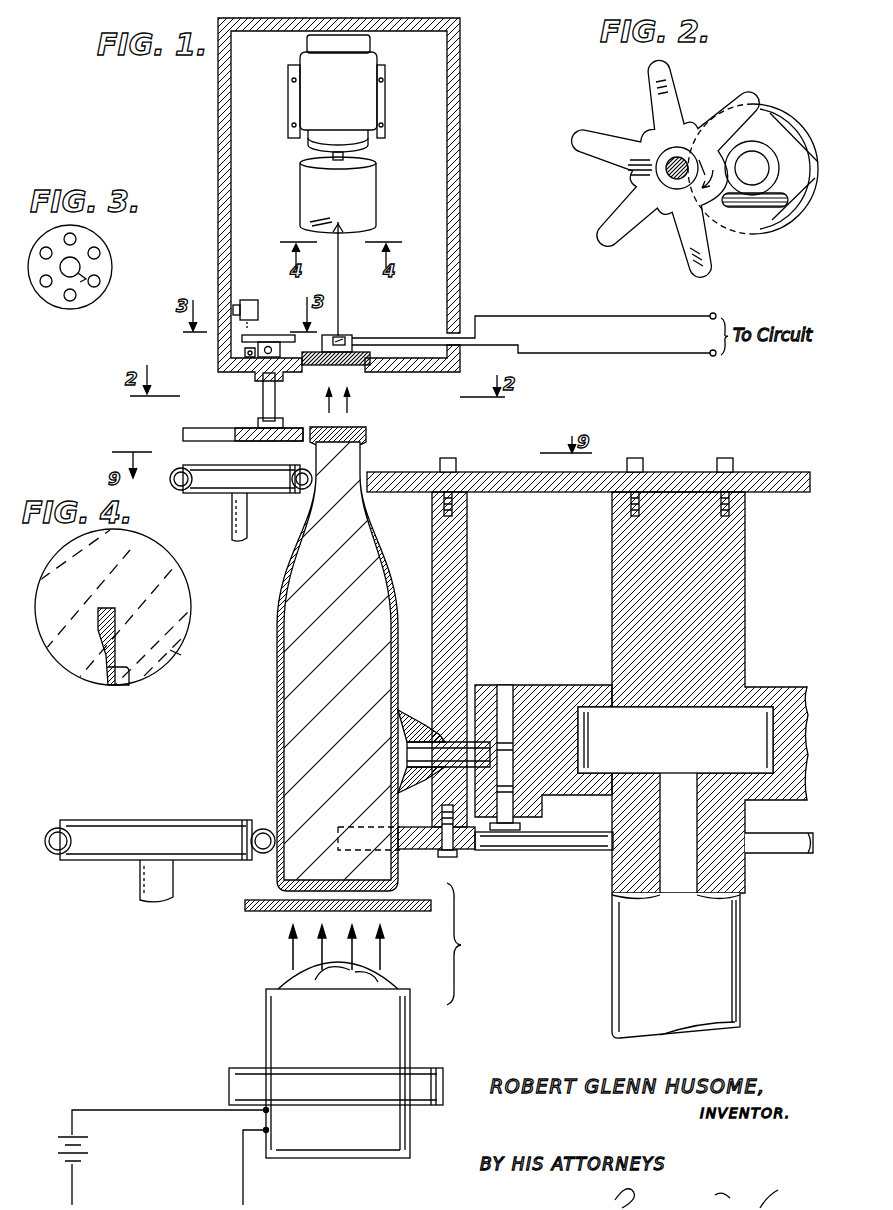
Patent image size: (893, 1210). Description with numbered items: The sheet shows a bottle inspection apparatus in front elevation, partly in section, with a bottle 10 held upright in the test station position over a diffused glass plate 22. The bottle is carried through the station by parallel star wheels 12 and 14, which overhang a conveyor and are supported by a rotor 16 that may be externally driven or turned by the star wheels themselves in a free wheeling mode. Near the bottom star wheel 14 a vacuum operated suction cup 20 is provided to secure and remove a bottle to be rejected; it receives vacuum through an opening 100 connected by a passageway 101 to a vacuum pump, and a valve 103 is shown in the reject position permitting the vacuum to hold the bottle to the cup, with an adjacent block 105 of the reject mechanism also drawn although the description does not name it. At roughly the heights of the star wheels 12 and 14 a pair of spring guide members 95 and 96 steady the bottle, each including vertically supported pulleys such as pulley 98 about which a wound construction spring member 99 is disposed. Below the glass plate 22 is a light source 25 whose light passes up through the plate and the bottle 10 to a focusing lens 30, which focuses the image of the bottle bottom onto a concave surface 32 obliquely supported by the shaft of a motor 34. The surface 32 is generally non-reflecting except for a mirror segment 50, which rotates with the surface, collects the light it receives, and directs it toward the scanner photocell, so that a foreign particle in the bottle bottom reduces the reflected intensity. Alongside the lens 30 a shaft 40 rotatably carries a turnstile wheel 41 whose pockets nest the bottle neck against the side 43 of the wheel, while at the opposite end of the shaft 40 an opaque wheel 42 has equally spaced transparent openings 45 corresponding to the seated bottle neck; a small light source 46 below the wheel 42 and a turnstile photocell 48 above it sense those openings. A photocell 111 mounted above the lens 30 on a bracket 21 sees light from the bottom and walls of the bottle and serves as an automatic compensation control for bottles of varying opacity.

In FIG. 1, the bottle 10 is at (266, 634).
In FIG. 2, the bottle 10 is at (813, 226).
In FIG. 1, the star wheel 12 is at (512, 472).
In FIG. 1, the star wheel 14 is at (462, 850).
In FIG. 1, the rotor 16 is at (738, 571).
In FIG. 1, the suction cup 20 is at (420, 726).
In FIG. 1, the bracket 21 is at (335, 334).
In FIG. 1, the diffused glass plate 22 is at (430, 906).
In FIG. 1, the light source 25 is at (346, 1057).
In FIG. 1, the focusing lens 30 is at (330, 365).
In FIG. 1, the concave surface 32 is at (367, 228).
In FIG. 4, the concave surface 32 is at (150, 646).
In FIG. 1, the motor 34 is at (348, 101).
In FIG. 1, the shaft 40 is at (263, 392).
In FIG. 3, the shaft 40 is at (86, 278).
In FIG. 1, the turnstile wheel 41 is at (222, 428).
In FIG. 2, the turnstile wheel 41 is at (606, 218).
In FIG. 1, the wheel 42 is at (278, 335).
In FIG. 3, the wheel 42 is at (112, 270).
In FIG. 2, the side of the wheel 43 is at (744, 228).
In FIG. 3, the transparent openings 45 is at (76, 239).
In FIG. 1, the small light source 46 is at (243, 354).
In FIG. 1, the turnstile photocell 48 is at (255, 298).
In FIG. 1, the mirror segment 50 is at (343, 225).
In FIG. 4, the mirror segment 50 is at (129, 690).
In FIG. 1, the spring guide member 95 is at (225, 500).
In FIG. 1, the spring guide member 96 is at (156, 810).
In FIG. 1, the pulley 98 is at (291, 466).
In FIG. 1, the wound construction spring member 99 is at (178, 468).
In FIG. 1, the opening 100 is at (468, 688).
In FIG. 1, the passageway 101 is at (503, 686).
In FIG. 1, the valve 103 is at (505, 832).
In FIG. 1, the block 105 is at (575, 690).
In FIG. 1, the photocell 111 is at (346, 338).